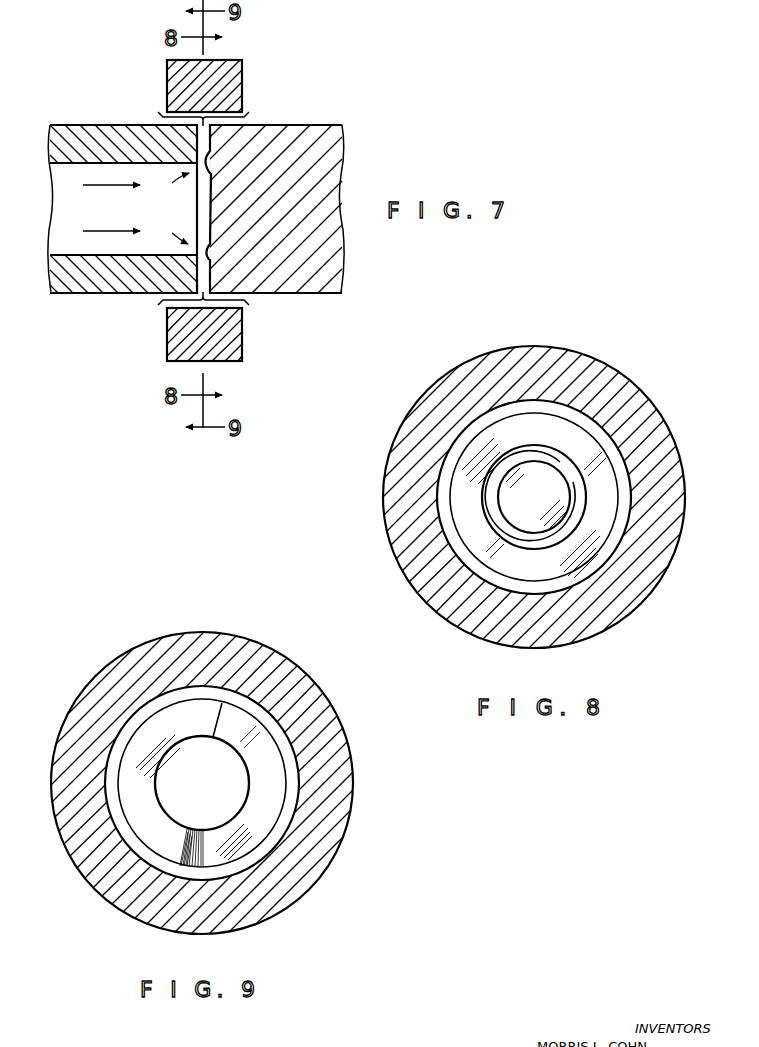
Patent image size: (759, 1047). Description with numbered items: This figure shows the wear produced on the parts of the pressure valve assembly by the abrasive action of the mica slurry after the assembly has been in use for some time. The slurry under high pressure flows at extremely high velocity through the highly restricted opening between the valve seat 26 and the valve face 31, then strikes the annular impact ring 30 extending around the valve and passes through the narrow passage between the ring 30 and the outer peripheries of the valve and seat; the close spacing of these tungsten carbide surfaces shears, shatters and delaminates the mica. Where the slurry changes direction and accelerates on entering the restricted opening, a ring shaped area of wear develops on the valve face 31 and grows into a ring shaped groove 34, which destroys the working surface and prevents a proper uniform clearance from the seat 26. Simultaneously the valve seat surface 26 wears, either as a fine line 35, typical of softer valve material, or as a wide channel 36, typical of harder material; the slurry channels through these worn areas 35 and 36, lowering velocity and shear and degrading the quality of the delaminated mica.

In FIG. 7, the valve seat 26 is at (197, 272).
In FIG. 9, the valve seat 26 is at (185, 718).
In FIG. 7, the annular impact ring 30 is at (233, 82).
In FIG. 8, the annular impact ring 30 is at (533, 347).
In FIG. 9, the annular impact ring 30 is at (100, 708).
In FIG. 7, the valve face 31 is at (207, 215).
In FIG. 7, the ring shaped groove 34 is at (200, 163).
In FIG. 8, the ring shaped groove 34 is at (558, 455).
In FIG. 9, the fine line 35 is at (248, 712).
In FIG. 9, the wide channel 36 is at (181, 848).